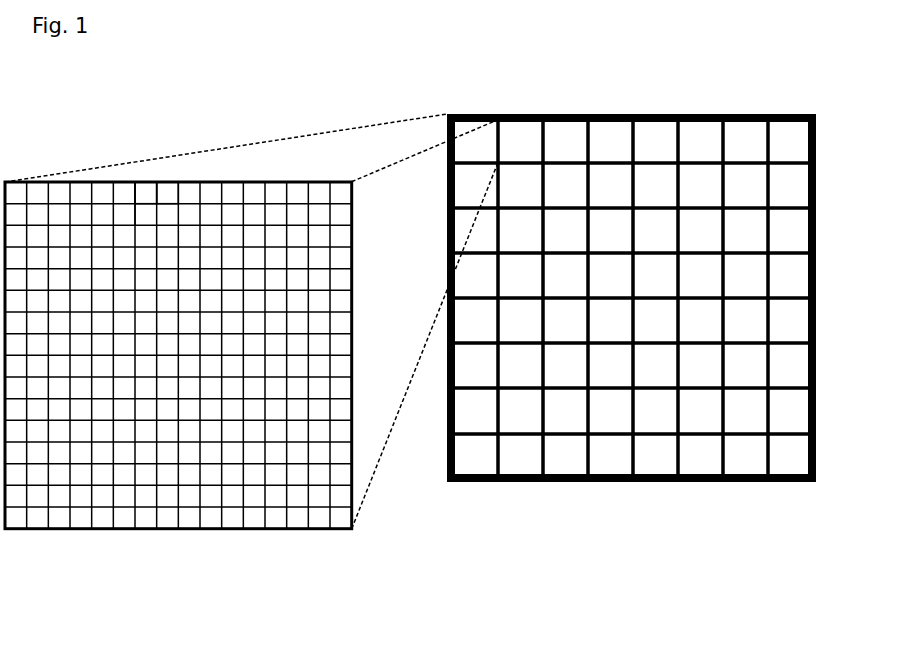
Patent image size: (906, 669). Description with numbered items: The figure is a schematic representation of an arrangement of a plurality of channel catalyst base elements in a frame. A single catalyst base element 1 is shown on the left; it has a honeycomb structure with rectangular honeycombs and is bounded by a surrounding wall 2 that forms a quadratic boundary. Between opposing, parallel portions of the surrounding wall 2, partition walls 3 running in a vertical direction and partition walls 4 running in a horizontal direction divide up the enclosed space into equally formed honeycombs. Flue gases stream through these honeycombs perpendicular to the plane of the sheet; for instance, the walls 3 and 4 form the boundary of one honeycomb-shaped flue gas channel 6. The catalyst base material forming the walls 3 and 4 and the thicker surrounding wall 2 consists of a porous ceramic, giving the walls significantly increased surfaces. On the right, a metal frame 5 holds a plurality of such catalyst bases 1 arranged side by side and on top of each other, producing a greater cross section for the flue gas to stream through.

The catalyst base element 1 is at (188, 545).
The surrounding wall 2 is at (290, 529).
The partition walls having a vertical direction 3 is at (133, 201).
The partition walls having a horizontal direction 4 is at (163, 202).
The metal frame 5 is at (552, 480).
The flue gas channel 6 is at (143, 191).